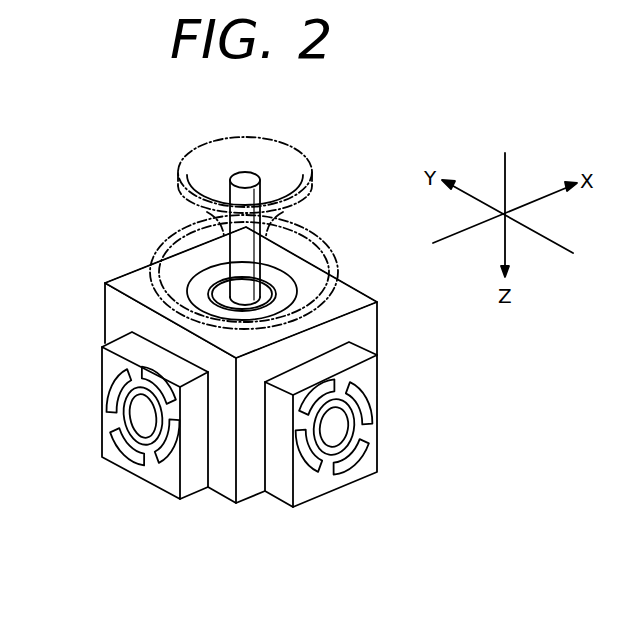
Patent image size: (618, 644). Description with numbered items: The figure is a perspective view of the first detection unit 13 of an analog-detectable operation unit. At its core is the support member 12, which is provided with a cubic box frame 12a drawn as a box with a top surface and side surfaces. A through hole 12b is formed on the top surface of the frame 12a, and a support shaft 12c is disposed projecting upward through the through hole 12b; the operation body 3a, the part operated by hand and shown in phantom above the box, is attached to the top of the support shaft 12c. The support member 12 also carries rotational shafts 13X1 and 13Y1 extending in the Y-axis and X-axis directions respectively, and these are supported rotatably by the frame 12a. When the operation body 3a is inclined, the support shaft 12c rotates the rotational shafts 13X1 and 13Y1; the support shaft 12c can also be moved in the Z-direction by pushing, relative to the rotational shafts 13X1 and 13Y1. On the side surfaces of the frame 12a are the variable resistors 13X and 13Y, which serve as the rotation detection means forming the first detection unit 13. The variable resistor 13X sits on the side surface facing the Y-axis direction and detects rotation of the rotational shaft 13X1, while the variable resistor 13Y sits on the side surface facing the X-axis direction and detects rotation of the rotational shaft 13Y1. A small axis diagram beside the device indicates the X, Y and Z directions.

The operation body 3a is at (276, 137).
The support member 12 is at (378, 320).
The cubic box frame 12a is at (135, 288).
The through hole 12b is at (290, 268).
The support shaft 12c is at (190, 227).
The first detection unit 13 is at (250, 515).
The variable resistor 13X is at (312, 488).
The rotational shaft 13X1 is at (335, 425).
The variable resistor 13Y is at (160, 475).
The rotational shaft 13Y1 is at (140, 410).